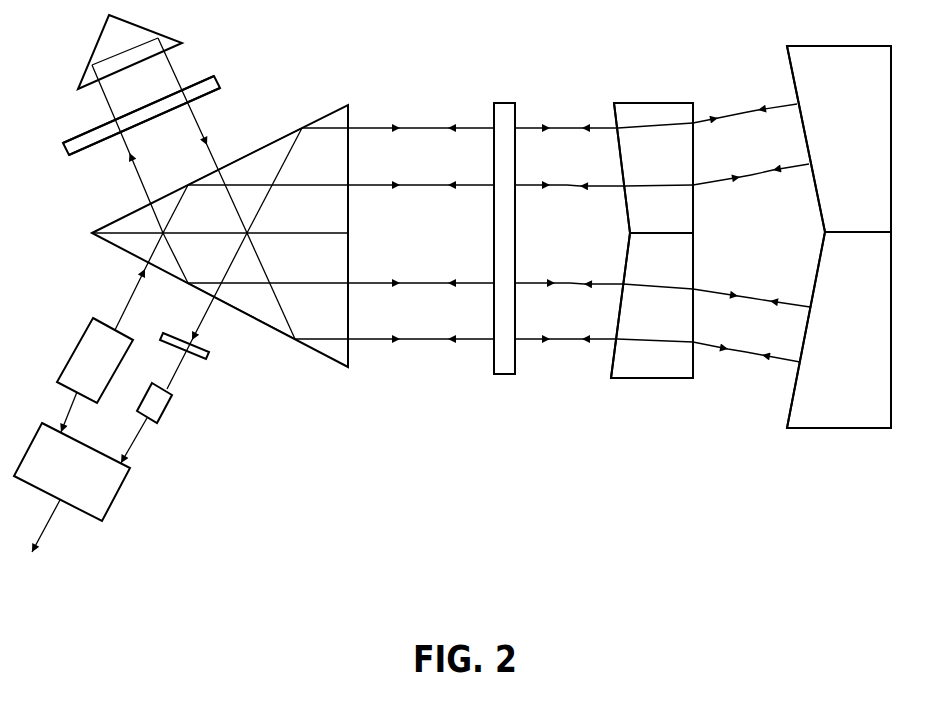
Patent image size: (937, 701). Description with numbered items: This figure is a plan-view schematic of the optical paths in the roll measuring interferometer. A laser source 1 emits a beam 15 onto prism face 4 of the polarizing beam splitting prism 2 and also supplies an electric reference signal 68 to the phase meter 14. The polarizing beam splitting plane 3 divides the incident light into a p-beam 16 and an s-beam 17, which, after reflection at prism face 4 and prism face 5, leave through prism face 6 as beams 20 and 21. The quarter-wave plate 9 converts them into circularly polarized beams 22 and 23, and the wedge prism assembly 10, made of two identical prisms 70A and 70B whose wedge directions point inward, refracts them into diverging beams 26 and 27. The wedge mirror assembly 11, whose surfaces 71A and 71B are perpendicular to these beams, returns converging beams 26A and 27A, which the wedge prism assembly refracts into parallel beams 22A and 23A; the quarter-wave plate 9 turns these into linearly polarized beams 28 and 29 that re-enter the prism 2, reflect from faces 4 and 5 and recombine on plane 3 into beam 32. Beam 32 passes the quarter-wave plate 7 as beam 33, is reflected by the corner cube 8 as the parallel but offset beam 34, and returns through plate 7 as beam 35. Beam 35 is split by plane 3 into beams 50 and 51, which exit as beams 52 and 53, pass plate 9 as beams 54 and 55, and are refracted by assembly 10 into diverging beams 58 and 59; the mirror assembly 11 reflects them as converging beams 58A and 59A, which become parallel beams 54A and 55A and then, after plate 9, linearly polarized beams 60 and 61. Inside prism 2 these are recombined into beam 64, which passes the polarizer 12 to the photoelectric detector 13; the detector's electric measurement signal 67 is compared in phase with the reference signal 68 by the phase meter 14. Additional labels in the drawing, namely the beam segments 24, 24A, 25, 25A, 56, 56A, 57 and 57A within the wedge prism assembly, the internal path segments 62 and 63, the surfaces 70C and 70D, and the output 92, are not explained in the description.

The laser source 1 is at (93, 360).
The polarizing beam splitting prism 2 is at (220, 221).
The polarizing beam splitting plane 3 is at (220, 223).
The prism face 4 is at (175, 269).
The prism face 5 is at (181, 193).
The prism face 6 is at (359, 236).
The quarter-wave plate 7 is at (154, 110).
The corner cube 8 is at (130, 49).
The quarter-wave plate 9 is at (504, 219).
The wedge prism assembly 10 is at (652, 223).
The wedge mirror assembly 11 is at (839, 221).
The polarizer 12 is at (202, 355).
The photoelectric detector 13 is at (168, 406).
The phase meter 14 is at (83, 472).
The beam 15 is at (133, 281).
The p-beam 16 is at (267, 205).
The s-beam 17 is at (267, 266).
The beam 20 is at (384, 173).
The beam 21 is at (384, 273).
The circular polarized beam 22 is at (541, 173).
The parallel beam 22A is at (596, 174).
The circular polarized beam 23 is at (542, 296).
The parallel beam 23A is at (596, 296).
The beam in lens 24 is at (641, 177).
The return beam in lens 24A is at (668, 197).
The beam in lens 25 is at (640, 276).
The return beam in lens 25A is at (670, 298).
The diverging beam 26 is at (722, 167).
The converging beam 26A is at (780, 161).
The diverging beam 27 is at (722, 305).
The converging beam 27A is at (780, 313).
The linear polarized beam 28 is at (457, 173).
The linear polarized beam 29 is at (457, 275).
The beam 32 is at (127, 149).
The beam 33 is at (144, 121).
The beam 34 is at (138, 101).
The beam 35 is at (202, 135).
The beam 50 is at (268, 311).
The beam 51 is at (268, 156).
The beam 52 is at (384, 328).
The beam 53 is at (384, 117).
The beam 54 is at (540, 352).
The parallel beam 54A is at (591, 352).
The beam 55 is at (540, 116).
The parallel beam 55A is at (591, 116).
The beam in lens 56 is at (636, 329).
The return beam in lens 56A is at (672, 350).
The beam in lens 57 is at (636, 119).
The return beam in lens 57A is at (670, 135).
The diverging beam 58 is at (719, 357).
The converging beam 58A is at (773, 366).
The diverging beam 59 is at (719, 110).
The converging beam 59A is at (771, 100).
The linear polarized beam 60 is at (457, 327).
The linear polarized beam 61 is at (457, 117).
The reflected beam path 62 is at (271, 286).
The reflected beam path 63 is at (274, 180).
The beam 64 is at (207, 311).
The electric measurement signal 67 is at (139, 440).
The electric reference signal 68 is at (56, 412).
The prism 70A is at (609, 168).
The prism 70B is at (609, 305).
The lens surface 70C is at (714, 168).
The lens surface 70D is at (714, 305).
The surface 71A is at (802, 139).
The surface 71B is at (800, 330).
The output signal 92 is at (50, 526).